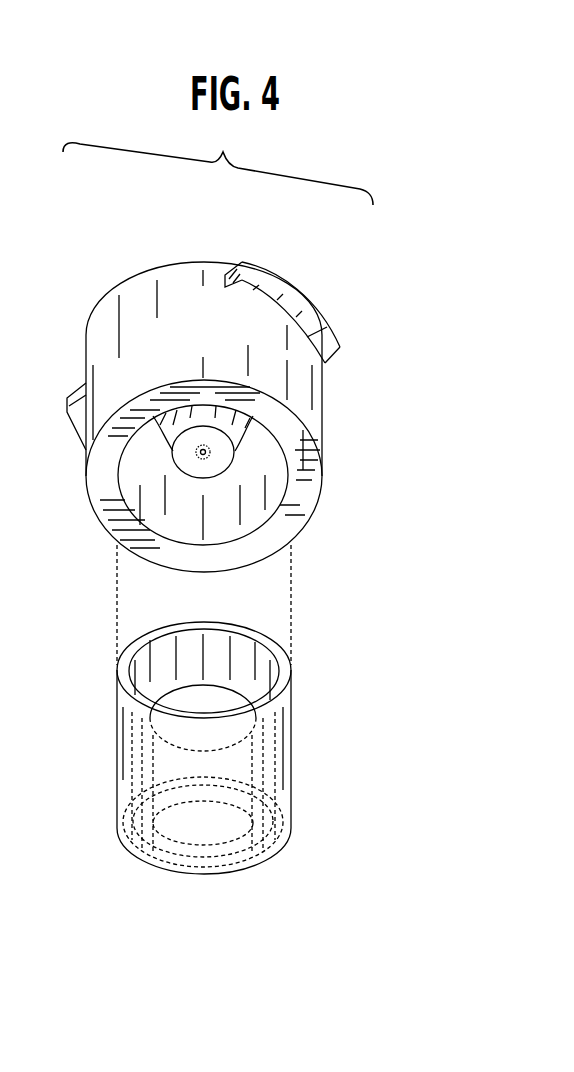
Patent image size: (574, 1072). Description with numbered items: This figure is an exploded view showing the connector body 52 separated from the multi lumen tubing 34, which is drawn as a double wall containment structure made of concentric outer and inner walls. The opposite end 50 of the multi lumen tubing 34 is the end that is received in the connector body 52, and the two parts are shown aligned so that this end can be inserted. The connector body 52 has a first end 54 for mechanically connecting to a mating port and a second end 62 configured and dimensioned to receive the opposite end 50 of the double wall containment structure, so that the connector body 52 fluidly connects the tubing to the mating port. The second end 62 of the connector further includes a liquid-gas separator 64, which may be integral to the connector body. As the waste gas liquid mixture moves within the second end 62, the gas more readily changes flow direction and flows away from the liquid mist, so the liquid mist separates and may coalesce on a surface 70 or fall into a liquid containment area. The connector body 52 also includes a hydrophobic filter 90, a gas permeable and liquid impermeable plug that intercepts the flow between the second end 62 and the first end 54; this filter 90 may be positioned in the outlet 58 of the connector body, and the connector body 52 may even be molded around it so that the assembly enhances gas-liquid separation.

The multi lumen tubing 34 is at (290, 767).
The opposite end 50 is at (296, 657).
The connector body 52 is at (211, 336).
The first end 54 is at (142, 276).
The outlet 58 is at (206, 456).
The second end 62 is at (305, 506).
The liquid-gas separator 64 is at (157, 446).
The surface 70 is at (242, 442).
The hydrophobic filter 90 is at (198, 455).